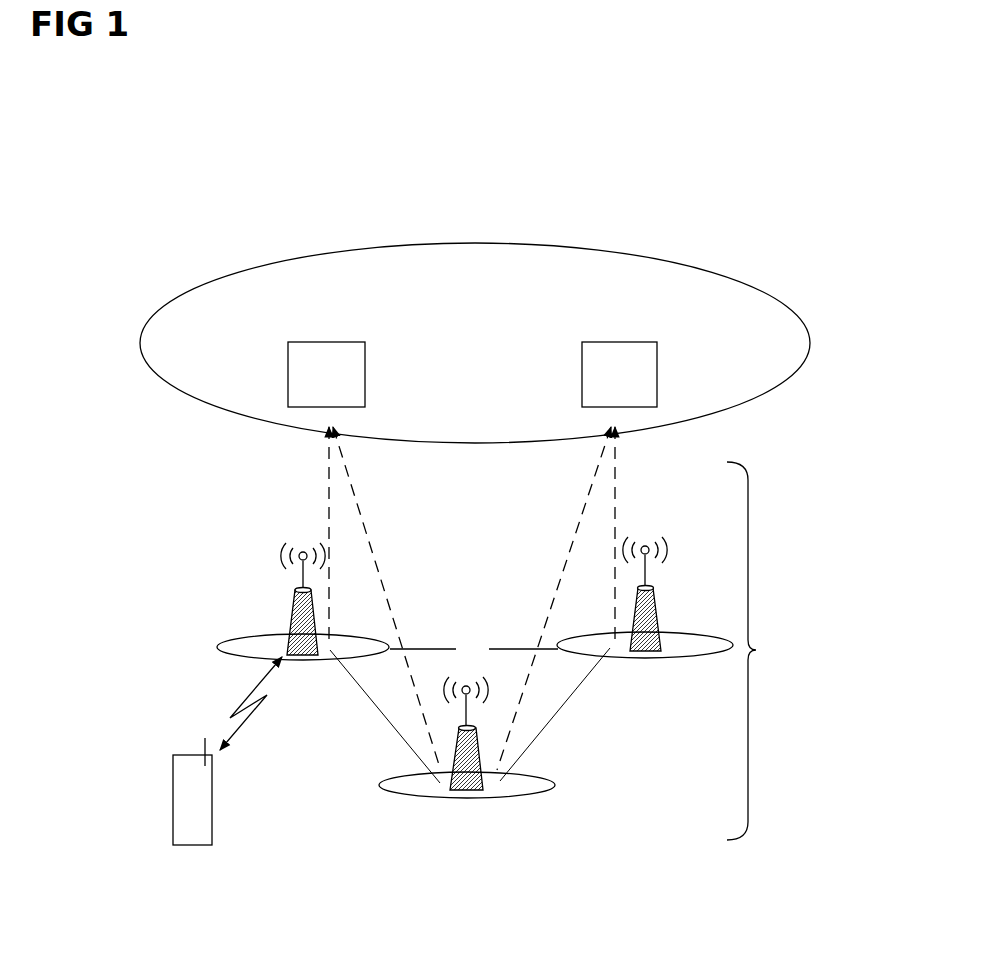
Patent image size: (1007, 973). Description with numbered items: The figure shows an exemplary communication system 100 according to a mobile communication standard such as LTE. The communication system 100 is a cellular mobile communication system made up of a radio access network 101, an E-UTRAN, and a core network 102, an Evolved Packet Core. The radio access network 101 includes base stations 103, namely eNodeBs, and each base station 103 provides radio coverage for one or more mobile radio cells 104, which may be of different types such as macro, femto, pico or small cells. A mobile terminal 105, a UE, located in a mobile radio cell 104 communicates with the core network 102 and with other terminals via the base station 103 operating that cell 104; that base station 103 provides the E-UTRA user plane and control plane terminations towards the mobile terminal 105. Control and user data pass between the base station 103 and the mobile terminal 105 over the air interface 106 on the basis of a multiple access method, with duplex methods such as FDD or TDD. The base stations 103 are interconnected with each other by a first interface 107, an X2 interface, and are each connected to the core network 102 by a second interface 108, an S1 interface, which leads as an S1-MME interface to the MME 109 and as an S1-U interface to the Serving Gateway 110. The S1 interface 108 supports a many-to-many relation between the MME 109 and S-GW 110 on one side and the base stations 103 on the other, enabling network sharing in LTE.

The communication system 100 is at (783, 170).
The radio access network 101 is at (848, 627).
The core network 102 is at (798, 320).
The base station 103 is at (295, 603).
The mobile radio cell 104 is at (232, 650).
The mobile terminal 105 is at (190, 846).
The air interface 106 is at (265, 712).
The first interface 107 is at (468, 632).
The second interface 108 is at (330, 490).
The MME 109 is at (327, 342).
The Serving Gateway 110 is at (620, 342).